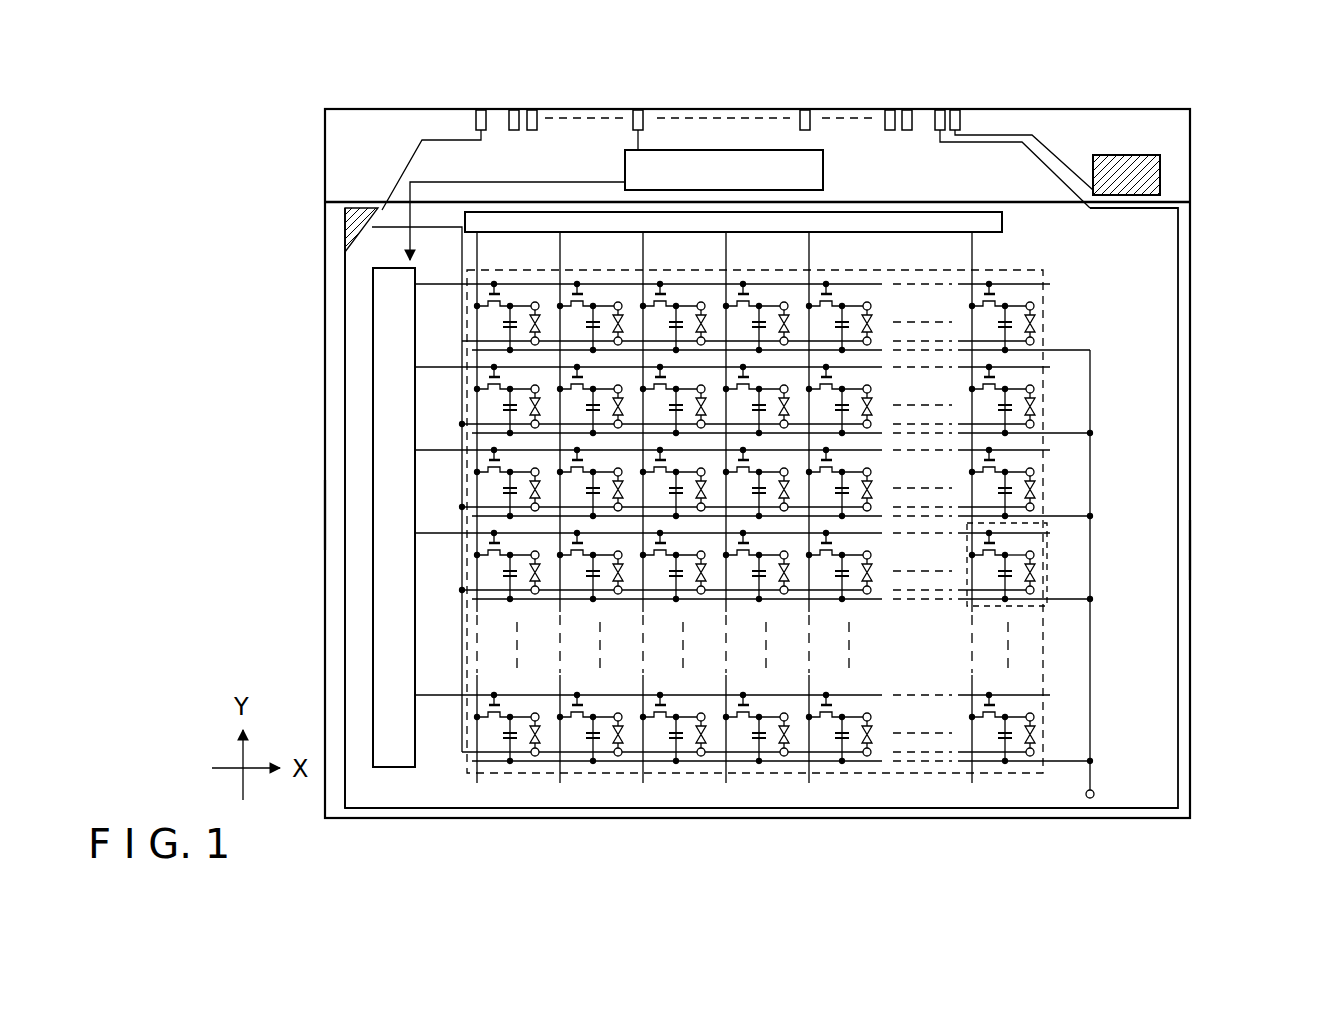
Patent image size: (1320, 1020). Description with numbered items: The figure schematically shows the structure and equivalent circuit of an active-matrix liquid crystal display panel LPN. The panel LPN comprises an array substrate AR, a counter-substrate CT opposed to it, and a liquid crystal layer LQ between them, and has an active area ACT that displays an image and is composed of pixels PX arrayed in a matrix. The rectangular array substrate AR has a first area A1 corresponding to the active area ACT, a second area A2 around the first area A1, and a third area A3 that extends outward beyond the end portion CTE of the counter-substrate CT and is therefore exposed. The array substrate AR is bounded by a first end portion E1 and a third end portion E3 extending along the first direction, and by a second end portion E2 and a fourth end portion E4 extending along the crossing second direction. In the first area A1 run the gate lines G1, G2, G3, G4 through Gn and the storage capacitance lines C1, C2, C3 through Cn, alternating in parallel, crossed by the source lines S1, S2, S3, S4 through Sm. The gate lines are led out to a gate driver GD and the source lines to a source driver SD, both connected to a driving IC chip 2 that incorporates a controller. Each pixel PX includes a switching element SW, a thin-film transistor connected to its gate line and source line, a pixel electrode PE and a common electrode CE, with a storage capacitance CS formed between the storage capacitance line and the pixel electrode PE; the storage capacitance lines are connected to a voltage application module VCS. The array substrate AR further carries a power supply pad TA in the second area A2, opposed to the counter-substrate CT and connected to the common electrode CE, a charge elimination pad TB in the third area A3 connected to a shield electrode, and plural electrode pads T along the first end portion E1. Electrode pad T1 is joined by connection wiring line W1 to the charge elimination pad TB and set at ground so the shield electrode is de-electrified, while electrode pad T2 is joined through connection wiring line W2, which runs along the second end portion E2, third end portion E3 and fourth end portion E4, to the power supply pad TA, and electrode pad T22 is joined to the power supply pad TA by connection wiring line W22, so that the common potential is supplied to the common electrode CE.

The liquid crystal display panel LPN is at (1205, 116).
The electrode pads T is at (987, 56).
The electrode pad T22 is at (481, 109).
The electrode pad T2 is at (940, 109).
The electrode pad T1 is at (955, 109).
The first end portion E1 is at (716, 113).
The second end portion E2 is at (1194, 550).
The third end portion E3 is at (752, 823).
The fourth end portion E4 is at (322, 515).
The driving IC chip 2 is at (824, 172).
The connection wiring line W22 is at (447, 137).
The connection wiring line W1 is at (1062, 163).
The connection wiring line W2 is at (344, 462).
The charge elimination pad TB is at (1130, 155).
The power supply pad TA is at (343, 228).
The third area A3 is at (997, 122).
The second area A2 is at (380, 250).
The first area A1 is at (1045, 375).
The active area ACT is at (862, 515).
The end portion of the counter-substrate CTE is at (1000, 196).
The array substrate AR is at (1165, 108).
The counter-substrate CT is at (1180, 200).
The source driver SD is at (1003, 220).
The gate driver GD is at (372, 640).
The gate line G1 is at (430, 283).
The gate line G2 is at (430, 366).
The gate line G3 is at (430, 449).
The gate line G4 is at (430, 532).
The gate line Gn is at (430, 694).
The source line S1 is at (479, 250).
The source line S2 is at (562, 250).
The source line S3 is at (645, 250).
The source line S4 is at (728, 250).
The source line Sm is at (974, 250).
The storage capacitance line C1 is at (1067, 349).
The storage capacitance line C2 is at (1067, 432).
The storage capacitance line C3 is at (1067, 515).
The storage capacitance line Cn is at (1067, 760).
The voltage application module VCS is at (1094, 796).
The pixel PX is at (1047, 605).
The switching element SW is at (974, 545).
The storage capacitance CS is at (998, 575).
The pixel electrode PE is at (1034, 552).
The liquid crystal layer LQ is at (1036, 572).
The common electrode CE is at (1035, 587).